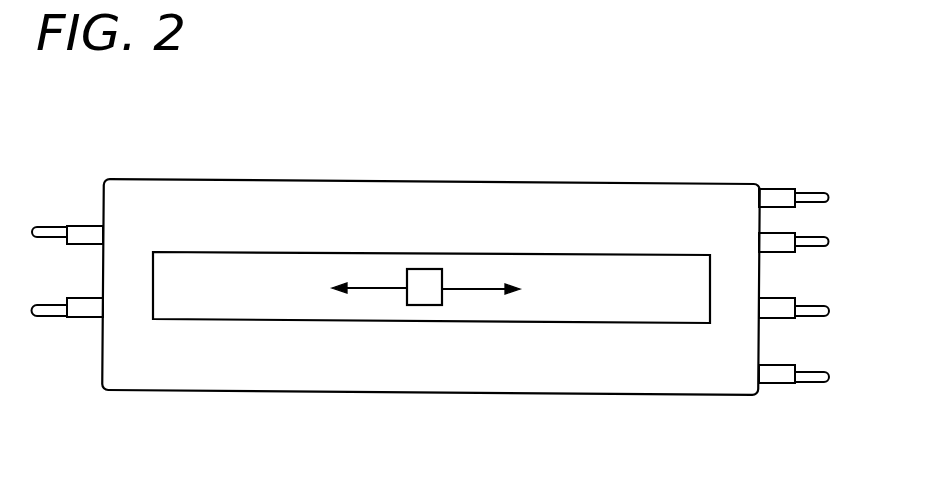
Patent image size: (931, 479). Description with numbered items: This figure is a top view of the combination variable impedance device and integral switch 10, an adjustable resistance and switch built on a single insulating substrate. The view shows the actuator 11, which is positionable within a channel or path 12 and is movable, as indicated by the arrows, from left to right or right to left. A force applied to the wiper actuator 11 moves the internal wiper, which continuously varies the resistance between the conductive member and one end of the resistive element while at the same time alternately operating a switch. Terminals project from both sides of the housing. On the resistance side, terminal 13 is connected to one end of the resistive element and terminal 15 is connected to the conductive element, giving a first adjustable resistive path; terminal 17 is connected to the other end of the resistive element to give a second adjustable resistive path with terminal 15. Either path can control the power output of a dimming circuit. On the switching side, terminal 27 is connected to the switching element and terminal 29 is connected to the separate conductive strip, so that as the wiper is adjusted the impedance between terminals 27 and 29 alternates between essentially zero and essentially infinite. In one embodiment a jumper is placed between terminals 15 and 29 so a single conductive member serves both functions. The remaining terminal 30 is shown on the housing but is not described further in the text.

The combination variable impedance device and integral switch 10 is at (568, 158).
The actuator 11 is at (424, 268).
The channel or path 12 is at (255, 260).
The terminal 13 is at (80, 312).
The terminal 15 is at (778, 383).
The terminal 17 is at (783, 312).
The terminal 27 is at (78, 230).
The terminal 29 is at (778, 189).
The terminal pin 30 is at (812, 234).